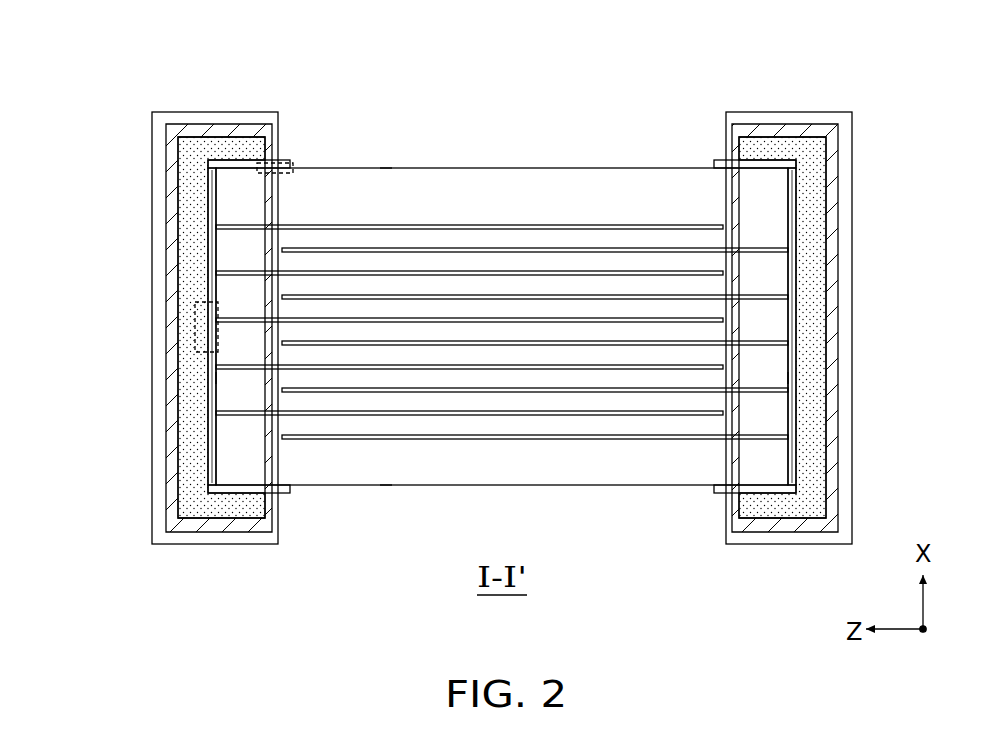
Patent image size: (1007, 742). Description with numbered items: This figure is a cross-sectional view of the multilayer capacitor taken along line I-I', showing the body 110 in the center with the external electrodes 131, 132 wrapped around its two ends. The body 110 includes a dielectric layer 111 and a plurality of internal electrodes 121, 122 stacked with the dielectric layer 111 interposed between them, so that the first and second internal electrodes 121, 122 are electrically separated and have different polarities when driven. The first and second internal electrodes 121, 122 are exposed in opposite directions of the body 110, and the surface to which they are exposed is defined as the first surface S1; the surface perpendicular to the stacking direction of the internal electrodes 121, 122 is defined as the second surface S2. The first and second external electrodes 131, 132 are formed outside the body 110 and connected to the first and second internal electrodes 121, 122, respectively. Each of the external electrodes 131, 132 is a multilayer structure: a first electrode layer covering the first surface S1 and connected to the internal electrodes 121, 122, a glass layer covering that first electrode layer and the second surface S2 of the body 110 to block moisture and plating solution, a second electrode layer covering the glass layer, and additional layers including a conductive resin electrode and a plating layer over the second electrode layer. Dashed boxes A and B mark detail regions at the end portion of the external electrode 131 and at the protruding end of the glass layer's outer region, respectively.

The body 110 is at (503, 316).
The dielectric layer 111 is at (625, 238).
The first internal electrode 121 is at (450, 225).
The second internal electrode 122 is at (518, 247).
The first external electrode 131 is at (189, 287).
The second external electrode 132 is at (837, 288).
The first surface S1 is at (215, 378).
The second surface S2 is at (386, 165).
The enlarged region A is at (195, 325).
The enlarged region B is at (291, 163).